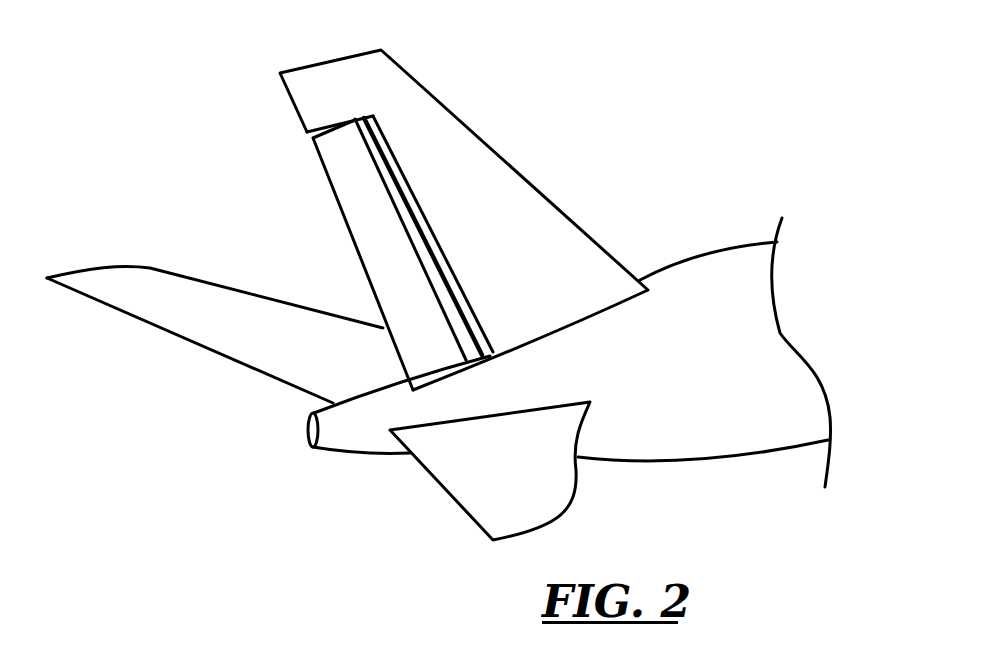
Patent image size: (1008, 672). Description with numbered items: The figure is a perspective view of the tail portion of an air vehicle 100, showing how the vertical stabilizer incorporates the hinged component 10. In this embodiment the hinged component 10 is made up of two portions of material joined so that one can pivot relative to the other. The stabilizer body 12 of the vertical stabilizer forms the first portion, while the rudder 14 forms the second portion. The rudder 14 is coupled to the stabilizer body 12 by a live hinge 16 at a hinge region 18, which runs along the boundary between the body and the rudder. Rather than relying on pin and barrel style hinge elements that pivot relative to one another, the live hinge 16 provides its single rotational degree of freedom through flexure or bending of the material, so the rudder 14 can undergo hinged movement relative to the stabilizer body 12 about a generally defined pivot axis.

The air vehicle 100 is at (711, 73).
The hinged component 10 is at (381, 78).
The stabilizer body 12 is at (460, 138).
The rudder 14 is at (353, 210).
The live hinge 16 is at (362, 120).
The hinge region 18 is at (428, 210).